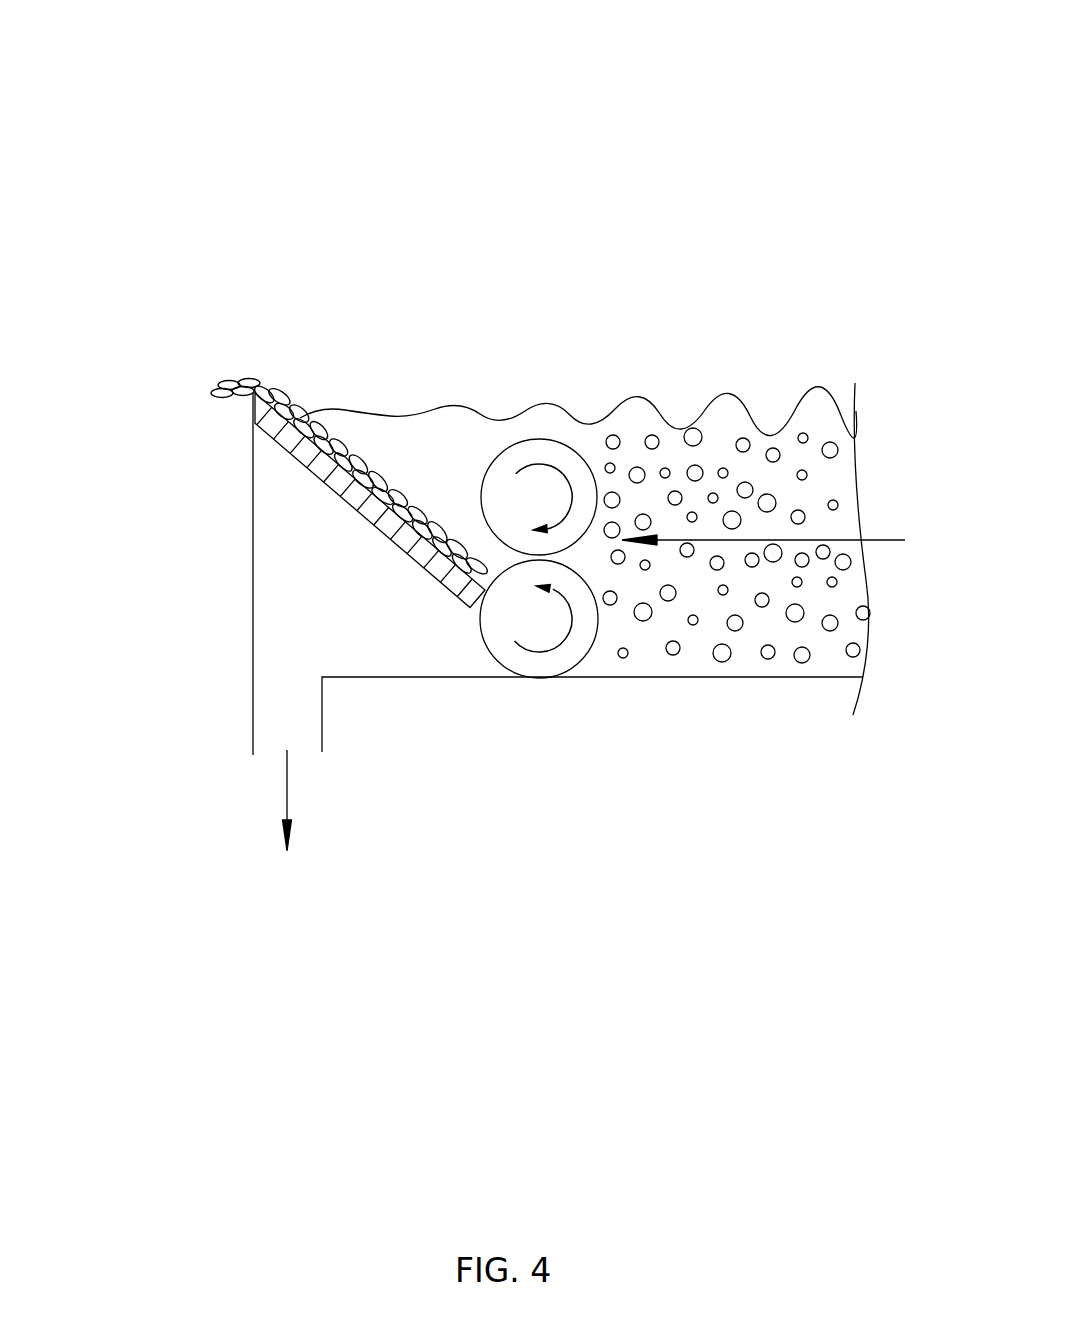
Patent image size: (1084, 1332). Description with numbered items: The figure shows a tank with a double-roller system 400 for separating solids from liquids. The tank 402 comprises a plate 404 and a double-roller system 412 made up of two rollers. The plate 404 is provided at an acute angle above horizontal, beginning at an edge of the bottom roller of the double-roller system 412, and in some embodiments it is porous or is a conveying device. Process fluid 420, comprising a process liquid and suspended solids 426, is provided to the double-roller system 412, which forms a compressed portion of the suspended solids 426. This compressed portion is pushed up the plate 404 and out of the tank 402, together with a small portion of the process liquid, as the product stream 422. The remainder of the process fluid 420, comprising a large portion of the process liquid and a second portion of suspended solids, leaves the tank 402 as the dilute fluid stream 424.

The tank with a double-roller system 400 is at (165, 58).
The tank 402 is at (255, 621).
The plate 404 is at (278, 410).
The double-roller system 412 is at (561, 445).
The process fluid 420 is at (792, 542).
The product stream 422 is at (207, 385).
The dilute fluid stream 424 is at (288, 822).
The suspended solids 426 is at (653, 437).